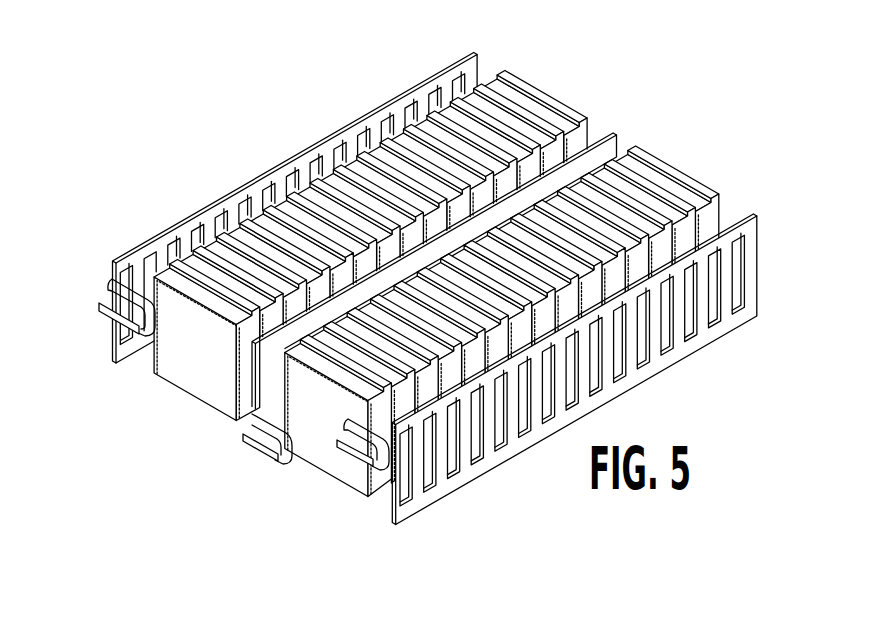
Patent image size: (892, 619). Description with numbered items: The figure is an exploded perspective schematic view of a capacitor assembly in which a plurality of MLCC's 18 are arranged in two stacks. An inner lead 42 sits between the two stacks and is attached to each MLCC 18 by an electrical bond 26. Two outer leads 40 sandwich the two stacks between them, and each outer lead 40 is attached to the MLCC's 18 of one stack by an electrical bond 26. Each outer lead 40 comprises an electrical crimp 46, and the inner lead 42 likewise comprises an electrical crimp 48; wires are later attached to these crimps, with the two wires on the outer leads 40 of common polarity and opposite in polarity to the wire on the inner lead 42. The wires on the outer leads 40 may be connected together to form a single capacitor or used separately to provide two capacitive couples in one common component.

The MLCC 18 is at (305, 218).
The electrical bond 26 is at (584, 128).
The outer lead 40 is at (469, 68).
The inner lead 42 is at (613, 137).
The electrical crimp 46 is at (104, 302).
The electrical crimp 48 is at (253, 445).